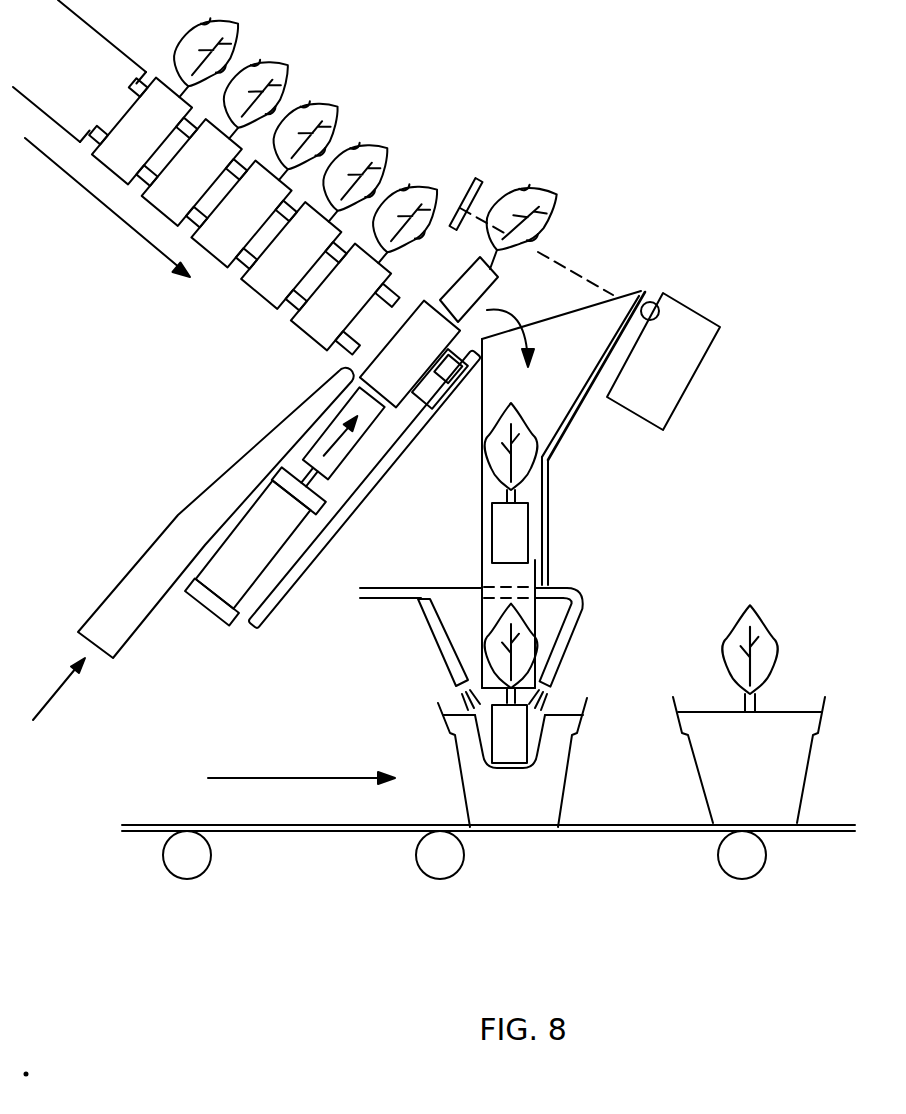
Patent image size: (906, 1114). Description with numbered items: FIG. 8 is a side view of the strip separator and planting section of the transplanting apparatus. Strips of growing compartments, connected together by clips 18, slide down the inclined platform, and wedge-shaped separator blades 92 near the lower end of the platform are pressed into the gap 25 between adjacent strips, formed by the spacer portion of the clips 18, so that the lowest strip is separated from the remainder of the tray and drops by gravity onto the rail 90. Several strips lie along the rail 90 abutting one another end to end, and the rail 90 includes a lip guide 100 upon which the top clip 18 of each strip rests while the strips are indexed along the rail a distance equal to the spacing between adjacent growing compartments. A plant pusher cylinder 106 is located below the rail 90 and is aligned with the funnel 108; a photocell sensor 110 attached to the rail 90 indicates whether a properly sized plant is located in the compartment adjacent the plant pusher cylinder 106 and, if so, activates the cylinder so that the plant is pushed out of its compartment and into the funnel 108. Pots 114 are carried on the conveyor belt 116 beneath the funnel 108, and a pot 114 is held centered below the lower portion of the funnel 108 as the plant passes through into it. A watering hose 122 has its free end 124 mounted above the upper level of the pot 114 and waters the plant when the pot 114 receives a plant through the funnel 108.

The clip 18 is at (397, 297).
The gap 25 is at (240, 276).
The rail 90 is at (383, 480).
The separator blade 92 is at (182, 514).
The lip guide 100 is at (443, 385).
The plant pusher cylinder 106 is at (222, 600).
The funnel 108 is at (573, 420).
The photocell sensor 110 is at (680, 378).
The pot 114 is at (547, 783).
The conveyor belt 116 is at (670, 833).
The watering hose 122 is at (382, 595).
The free end 124 is at (460, 685).